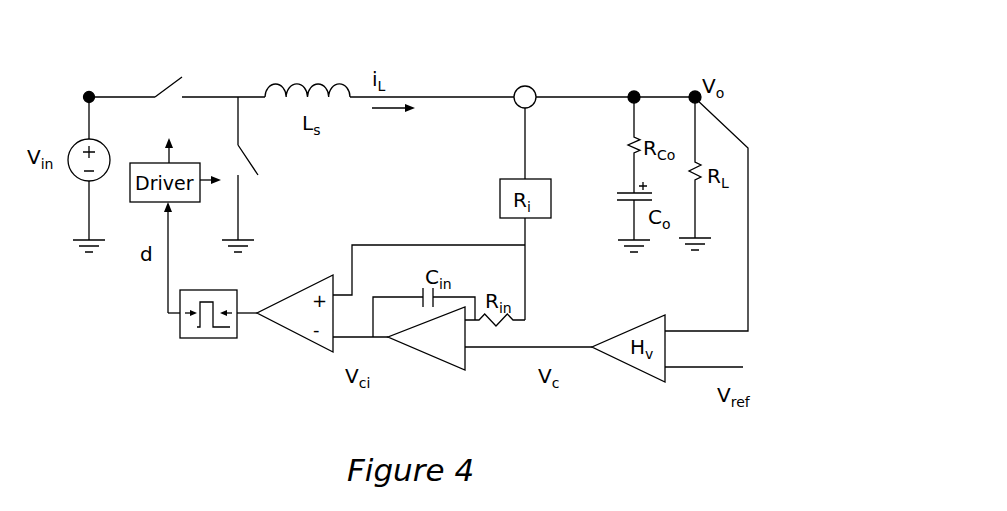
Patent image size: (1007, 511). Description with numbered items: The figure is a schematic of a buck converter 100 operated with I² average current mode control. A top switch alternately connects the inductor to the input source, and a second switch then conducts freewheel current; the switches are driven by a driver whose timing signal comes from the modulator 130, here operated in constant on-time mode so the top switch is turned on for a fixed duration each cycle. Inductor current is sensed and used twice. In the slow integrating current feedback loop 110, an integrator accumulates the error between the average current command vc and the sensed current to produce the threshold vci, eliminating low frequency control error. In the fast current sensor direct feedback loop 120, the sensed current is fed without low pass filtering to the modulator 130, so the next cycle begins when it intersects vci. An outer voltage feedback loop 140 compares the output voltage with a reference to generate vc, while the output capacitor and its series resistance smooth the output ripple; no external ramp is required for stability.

The buck converter 100 is at (657, 78).
The slow integrating current feedback loop 110 is at (427, 360).
The fast current sensor direct feedback loop 120 is at (393, 244).
The modulator 130 is at (178, 328).
The voltage feedback path 140 is at (740, 136).